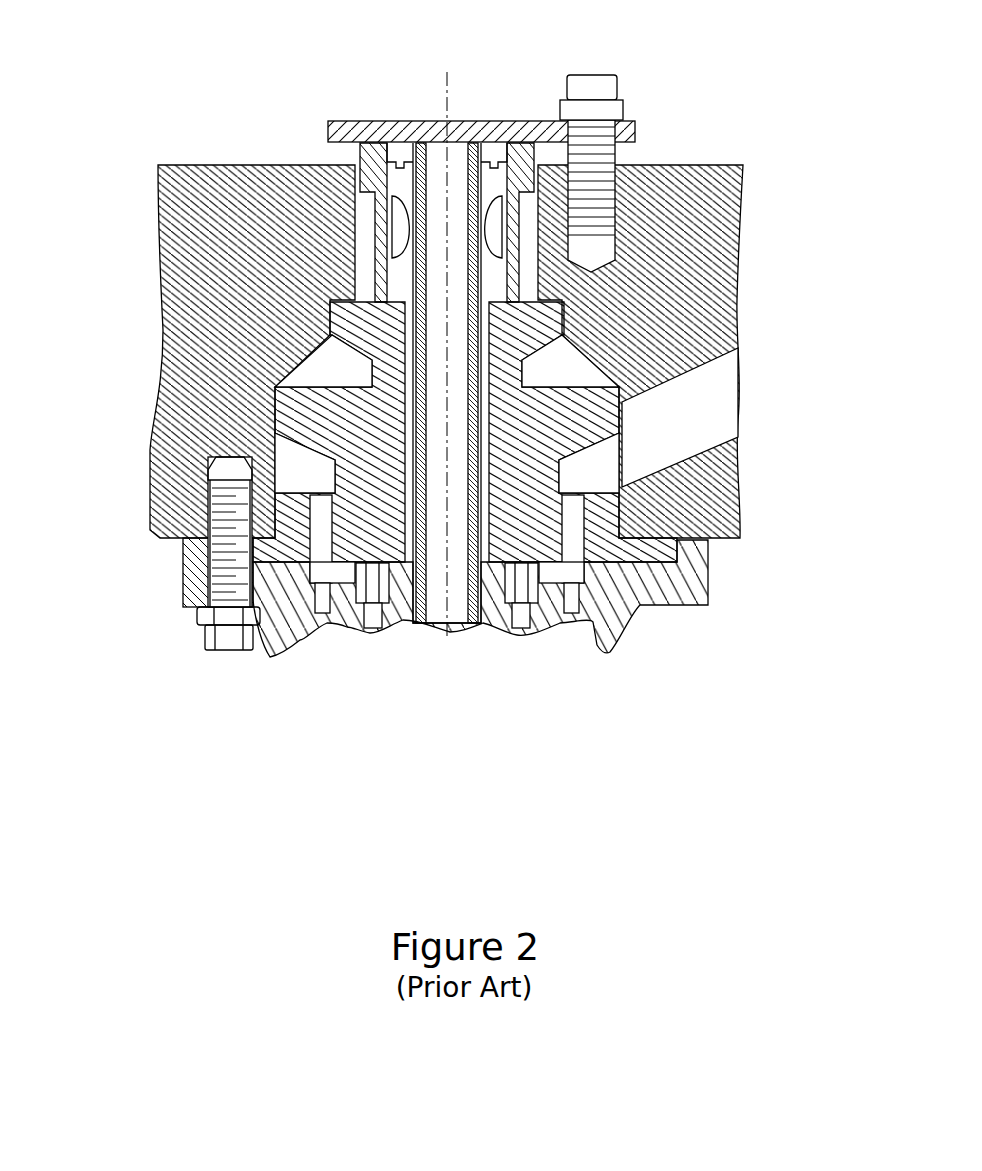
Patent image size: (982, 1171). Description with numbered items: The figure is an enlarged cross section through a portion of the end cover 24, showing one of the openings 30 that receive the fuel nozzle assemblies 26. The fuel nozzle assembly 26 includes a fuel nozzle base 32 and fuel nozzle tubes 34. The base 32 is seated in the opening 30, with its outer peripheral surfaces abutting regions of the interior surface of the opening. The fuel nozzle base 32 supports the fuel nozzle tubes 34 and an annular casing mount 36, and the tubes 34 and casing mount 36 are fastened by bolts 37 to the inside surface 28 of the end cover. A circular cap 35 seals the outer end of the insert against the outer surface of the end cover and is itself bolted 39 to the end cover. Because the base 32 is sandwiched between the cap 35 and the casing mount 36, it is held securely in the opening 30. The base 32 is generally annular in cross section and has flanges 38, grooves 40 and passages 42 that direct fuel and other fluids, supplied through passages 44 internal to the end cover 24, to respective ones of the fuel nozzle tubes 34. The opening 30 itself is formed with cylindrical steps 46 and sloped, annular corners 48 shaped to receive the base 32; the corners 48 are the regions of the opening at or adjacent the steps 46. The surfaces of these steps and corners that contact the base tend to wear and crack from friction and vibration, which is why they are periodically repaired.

The end cover 24 is at (177, 163).
The fuel nozzle assembly 26 is at (335, 688).
The inside surface 28 is at (163, 550).
The opening 30 is at (340, 223).
The fuel nozzle base 32 is at (350, 437).
The fuel nozzle tubes 34 is at (483, 625).
The circular cap 35 is at (387, 120).
The annular casing mount 36 is at (610, 652).
The bolts 37 is at (232, 650).
The flanges 38 is at (625, 413).
The bolt 39 is at (592, 74).
The grooves 40 is at (597, 468).
The passages 42 is at (335, 523).
The passages 44 is at (727, 383).
The cylindrical steps 46 is at (275, 447).
The sloped annular corners 48 is at (320, 350).